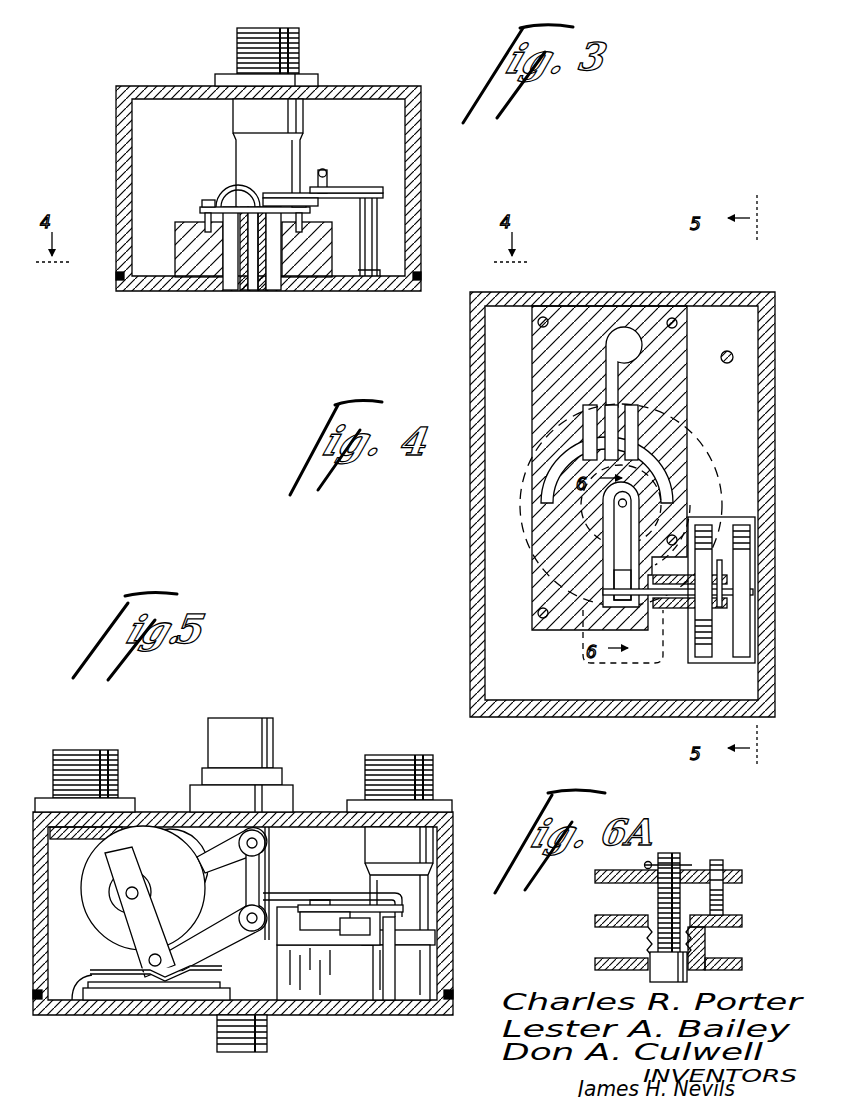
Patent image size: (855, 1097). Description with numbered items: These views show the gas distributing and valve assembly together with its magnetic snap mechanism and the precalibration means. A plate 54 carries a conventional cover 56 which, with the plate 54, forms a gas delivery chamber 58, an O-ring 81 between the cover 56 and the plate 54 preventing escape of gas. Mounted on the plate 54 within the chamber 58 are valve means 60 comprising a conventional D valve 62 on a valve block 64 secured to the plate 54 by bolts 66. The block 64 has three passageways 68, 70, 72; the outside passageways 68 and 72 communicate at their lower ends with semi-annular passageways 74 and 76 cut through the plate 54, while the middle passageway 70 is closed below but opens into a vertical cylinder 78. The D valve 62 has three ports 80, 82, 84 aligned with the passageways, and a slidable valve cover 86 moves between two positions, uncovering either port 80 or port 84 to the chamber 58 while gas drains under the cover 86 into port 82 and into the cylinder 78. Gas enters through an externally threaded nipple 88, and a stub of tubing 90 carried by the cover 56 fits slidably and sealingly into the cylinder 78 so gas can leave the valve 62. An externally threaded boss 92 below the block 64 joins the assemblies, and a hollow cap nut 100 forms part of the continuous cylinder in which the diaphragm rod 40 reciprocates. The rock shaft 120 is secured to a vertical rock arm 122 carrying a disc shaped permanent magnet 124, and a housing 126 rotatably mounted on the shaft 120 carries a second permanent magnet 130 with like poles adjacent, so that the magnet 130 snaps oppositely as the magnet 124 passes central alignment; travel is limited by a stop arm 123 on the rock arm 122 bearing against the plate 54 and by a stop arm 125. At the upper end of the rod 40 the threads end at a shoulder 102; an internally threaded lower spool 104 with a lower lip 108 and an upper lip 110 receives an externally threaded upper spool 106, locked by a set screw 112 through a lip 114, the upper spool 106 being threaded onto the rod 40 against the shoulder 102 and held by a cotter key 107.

In FIG. 6A, the diaphragm rod 40 is at (672, 974).
In FIG. 3, the plate 54 is at (162, 283).
In FIG. 5, the plate 54 is at (340, 992).
In FIG. 3, the cover 56 is at (160, 86).
In FIG. 3, the gas delivery chamber 58 is at (186, 137).
In FIG. 3, the valve means 60 is at (222, 198).
In FIG. 3, the D valve 62 is at (210, 200).
In FIG. 3, the valve block 64 is at (175, 240).
In FIG. 4, the valve block 64 is at (687, 372).
In FIG. 4, the bolts 66 is at (546, 318).
In FIG. 3, the outside passageway 68 is at (230, 255).
In FIG. 4, the outside passageway 68 is at (583, 420).
In FIG. 3, the middle passageway 70 is at (252, 270).
In FIG. 4, the middle passageway 70 is at (613, 446).
In FIG. 3, the outside passageway 72 is at (280, 262).
In FIG. 4, the outside passageway 72 is at (632, 432).
In FIG. 3, the semi-annular passageway 74 is at (231, 285).
In FIG. 3, the semi-annular passageway 76 is at (273, 285).
In FIG. 4, the vertical cylinder 78 is at (627, 336).
In FIG. 3, the port 80 is at (232, 202).
In FIG. 3, the O-ring 81 is at (116, 278).
In FIG. 3, the port 82 is at (266, 205).
In FIG. 3, the port 84 is at (290, 240).
In FIG. 3, the valve cover 86 is at (252, 198).
In FIG. 5, the externally threaded nipple 88 is at (118, 766).
In FIG. 3, the stub of tubing 90 is at (305, 112).
In FIG. 5, the stub of tubing 90 is at (362, 839).
In FIG. 5, the externally threaded boss 92 is at (268, 1035).
In FIG. 5, the hollow cap nut 100 is at (276, 735).
In FIG. 6A, the shoulder 102 is at (642, 940).
In FIG. 6A, the lower spool 104 is at (705, 945).
In FIG. 6A, the upper spool 106 is at (645, 882).
In FIG. 6A, the cotter key 107 is at (680, 863).
In FIG. 6A, the lower lip 108 is at (742, 962).
In FIG. 6A, the upper lip 110 is at (742, 920).
In FIG. 6A, the set screw 112 is at (722, 868).
In FIG. 6A, the lip 114 is at (742, 876).
In FIG. 5, the rock shaft 120 is at (133, 968).
In FIG. 5, the vertical rock arm 122 is at (135, 860).
In FIG. 4, the stop arm 123 is at (750, 653).
In FIG. 5, the stop arm 123 is at (200, 978).
In FIG. 5, the permanent magnet 124 is at (90, 908).
In FIG. 4, the stop arm 125 is at (705, 655).
In FIG. 5, the stop arm 125 is at (75, 978).
In FIG. 4, the housing 126 is at (668, 656).
In FIG. 5, the permanent magnet 130 is at (190, 846).